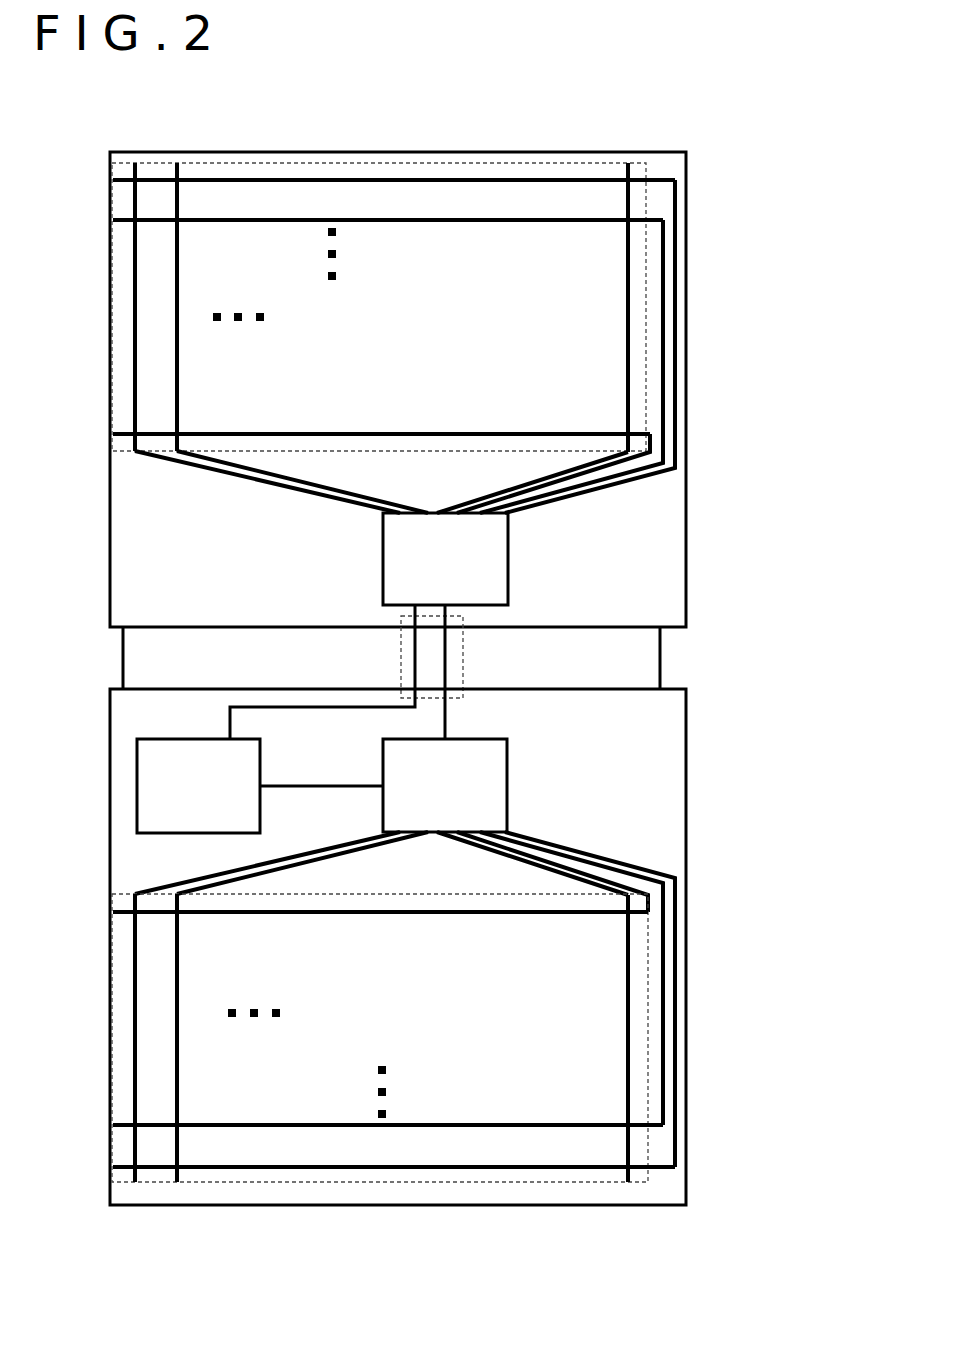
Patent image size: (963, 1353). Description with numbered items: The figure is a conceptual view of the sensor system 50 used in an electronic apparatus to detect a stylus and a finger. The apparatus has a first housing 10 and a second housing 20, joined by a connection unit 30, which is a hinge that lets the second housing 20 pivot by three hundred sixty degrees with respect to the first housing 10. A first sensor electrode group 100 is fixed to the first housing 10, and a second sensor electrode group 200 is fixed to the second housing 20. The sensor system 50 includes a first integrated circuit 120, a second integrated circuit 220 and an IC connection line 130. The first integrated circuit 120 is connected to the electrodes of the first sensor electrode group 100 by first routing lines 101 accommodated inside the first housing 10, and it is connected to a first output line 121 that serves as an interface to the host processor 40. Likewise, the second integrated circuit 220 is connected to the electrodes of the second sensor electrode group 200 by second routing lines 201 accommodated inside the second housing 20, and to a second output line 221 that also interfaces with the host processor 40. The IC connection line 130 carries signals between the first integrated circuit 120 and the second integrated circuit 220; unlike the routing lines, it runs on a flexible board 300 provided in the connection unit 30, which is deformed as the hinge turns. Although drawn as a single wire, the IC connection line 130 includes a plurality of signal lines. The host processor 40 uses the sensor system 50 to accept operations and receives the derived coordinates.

The sensor system 50 is at (403, 121).
The second housing 20 is at (686, 538).
The second sensor electrode group 200 is at (555, 163).
The second routing lines 201 is at (588, 485).
The second integrated circuit 220 is at (445, 559).
The connection unit 30 is at (660, 667).
The flexible board 300 is at (402, 660).
The IC connection line 130 is at (447, 667).
The second output line 221 is at (312, 711).
The first housing 10 is at (686, 843).
The host processor 40 is at (198, 786).
The first output line 121 is at (313, 788).
The first integrated circuit 120 is at (445, 785).
The first routing lines 101 is at (567, 842).
The first sensor electrode group 100 is at (485, 1185).